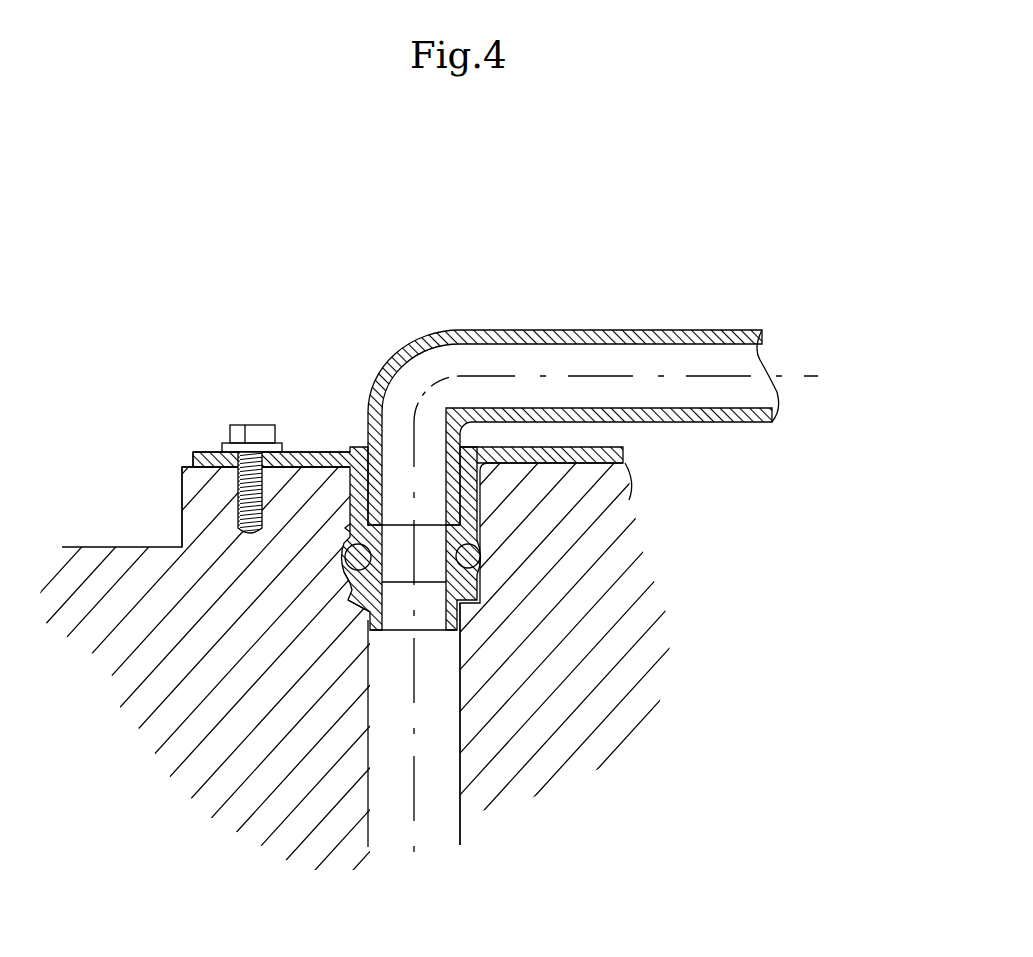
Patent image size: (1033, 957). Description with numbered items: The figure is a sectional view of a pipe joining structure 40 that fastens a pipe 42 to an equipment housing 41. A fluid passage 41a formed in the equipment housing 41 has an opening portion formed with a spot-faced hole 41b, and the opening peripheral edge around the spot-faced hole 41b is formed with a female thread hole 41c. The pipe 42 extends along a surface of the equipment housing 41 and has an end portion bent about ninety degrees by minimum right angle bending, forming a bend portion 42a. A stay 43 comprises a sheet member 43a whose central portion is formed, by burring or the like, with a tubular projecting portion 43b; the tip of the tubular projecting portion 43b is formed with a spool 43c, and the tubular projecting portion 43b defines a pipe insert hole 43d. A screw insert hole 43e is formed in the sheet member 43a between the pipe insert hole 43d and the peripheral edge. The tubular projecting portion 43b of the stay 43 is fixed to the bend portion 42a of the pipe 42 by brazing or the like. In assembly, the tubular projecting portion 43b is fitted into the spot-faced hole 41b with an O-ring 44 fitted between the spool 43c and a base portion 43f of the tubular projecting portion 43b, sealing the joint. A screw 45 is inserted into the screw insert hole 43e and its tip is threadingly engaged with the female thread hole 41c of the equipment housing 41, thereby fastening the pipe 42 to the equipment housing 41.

The pipe joining structure 40 is at (388, 337).
The equipment housing 41 is at (607, 528).
The fluid passage 41a is at (450, 747).
The spot-faced hole 41b is at (458, 628).
The female thread hole 41c is at (192, 483).
The pipe 42 is at (602, 327).
The bend portion 42a is at (380, 388).
The stay 43 is at (603, 440).
The sheet member 43a is at (323, 450).
The tubular projecting portion 43b is at (363, 598).
The spool 43c is at (363, 613).
The pipe insert hole 43d is at (466, 430).
The screw insert hole 43e is at (223, 447).
The base portion 43f is at (350, 528).
The O-ring 44 is at (480, 555).
The screw 45 is at (250, 425).